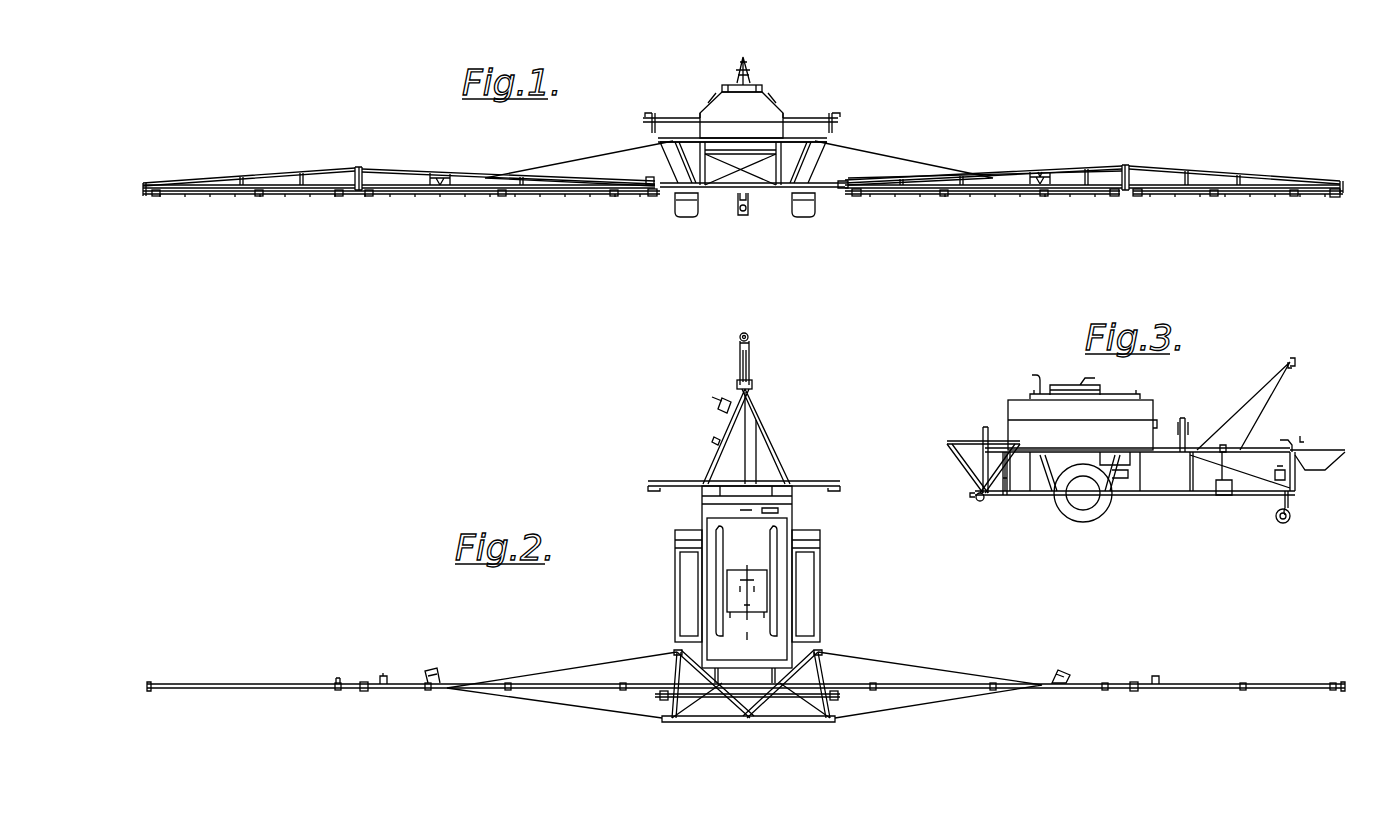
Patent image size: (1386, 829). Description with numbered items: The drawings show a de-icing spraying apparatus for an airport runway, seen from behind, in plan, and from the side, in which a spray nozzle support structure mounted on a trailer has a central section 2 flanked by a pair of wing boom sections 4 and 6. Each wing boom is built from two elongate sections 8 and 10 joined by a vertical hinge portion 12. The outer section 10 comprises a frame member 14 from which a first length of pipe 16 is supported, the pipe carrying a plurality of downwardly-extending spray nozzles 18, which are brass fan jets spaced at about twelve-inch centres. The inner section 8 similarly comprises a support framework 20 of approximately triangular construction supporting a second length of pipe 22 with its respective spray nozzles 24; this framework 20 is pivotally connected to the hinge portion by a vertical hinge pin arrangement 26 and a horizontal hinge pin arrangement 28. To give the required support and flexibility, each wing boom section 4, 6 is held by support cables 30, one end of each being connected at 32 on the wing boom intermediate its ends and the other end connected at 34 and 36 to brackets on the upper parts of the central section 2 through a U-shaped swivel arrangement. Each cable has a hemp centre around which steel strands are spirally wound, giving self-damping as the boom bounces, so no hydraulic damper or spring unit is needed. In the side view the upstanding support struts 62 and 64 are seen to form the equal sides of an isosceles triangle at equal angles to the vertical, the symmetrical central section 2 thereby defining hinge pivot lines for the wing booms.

In FIG. 1, the central section 2 is at (769, 220).
In FIG. 1, the wing boom section 4 is at (396, 158).
In FIG. 1, the wing boom section 6 is at (1167, 146).
In FIG. 1, the elongate section 8 is at (1034, 212).
In FIG. 1, the elongate section 10 is at (1259, 205).
In FIG. 1, the vertical hinge portion 12 is at (1123, 172).
In FIG. 1, the frame member 14 is at (1258, 174).
In FIG. 1, the first length of pipe 16 is at (1290, 195).
In FIG. 1, the spray nozzles 18 is at (1322, 195).
In FIG. 1, the support framework 20 is at (950, 173).
In FIG. 1, the second length of pipe 22 is at (935, 193).
In FIG. 1, the spray nozzles 24 is at (884, 195).
In FIG. 1, the vertical hinge pin arrangement 26 is at (852, 182).
In FIG. 1, the horizontal hinge pin arrangement 28 is at (840, 182).
In FIG. 1, the support cables 30 is at (570, 152).
In FIG. 2, the support cables 30 is at (900, 705).
In FIG. 1, the cable connection point 32 is at (1045, 172).
In FIG. 2, the cable connection point 32 is at (1050, 675).
In FIG. 1, the bracket connection point 34 is at (820, 140).
In FIG. 2, the bracket connection point 34 is at (828, 717).
In FIG. 2, the bracket connection point 36 is at (823, 653).
In FIG. 3, the upstanding support strut 62 is at (1007, 480).
In FIG. 3, the upstanding support strut 64 is at (963, 470).